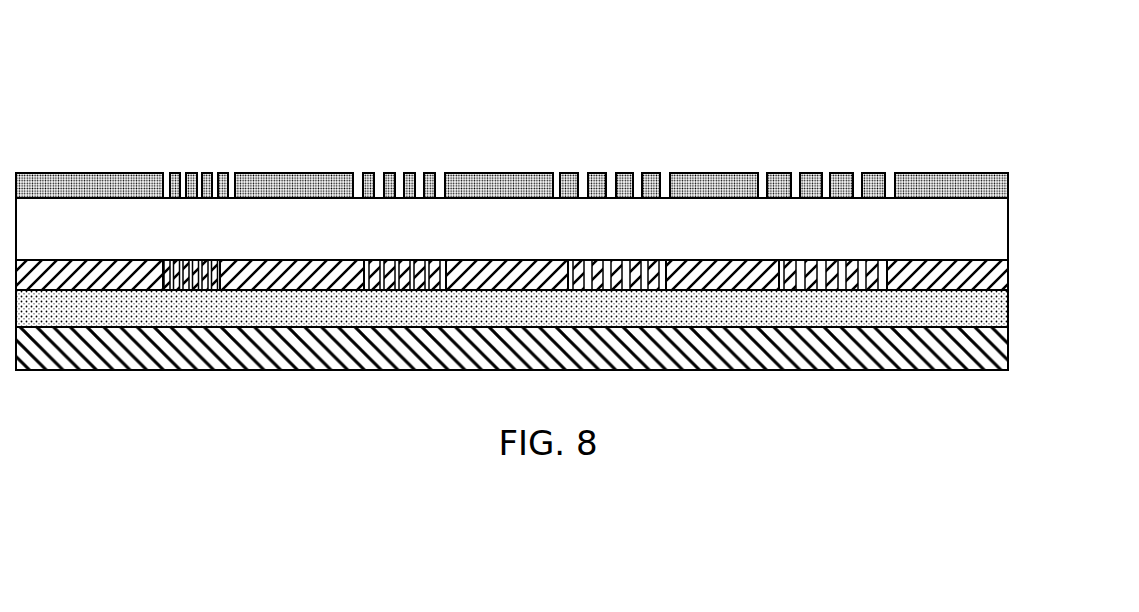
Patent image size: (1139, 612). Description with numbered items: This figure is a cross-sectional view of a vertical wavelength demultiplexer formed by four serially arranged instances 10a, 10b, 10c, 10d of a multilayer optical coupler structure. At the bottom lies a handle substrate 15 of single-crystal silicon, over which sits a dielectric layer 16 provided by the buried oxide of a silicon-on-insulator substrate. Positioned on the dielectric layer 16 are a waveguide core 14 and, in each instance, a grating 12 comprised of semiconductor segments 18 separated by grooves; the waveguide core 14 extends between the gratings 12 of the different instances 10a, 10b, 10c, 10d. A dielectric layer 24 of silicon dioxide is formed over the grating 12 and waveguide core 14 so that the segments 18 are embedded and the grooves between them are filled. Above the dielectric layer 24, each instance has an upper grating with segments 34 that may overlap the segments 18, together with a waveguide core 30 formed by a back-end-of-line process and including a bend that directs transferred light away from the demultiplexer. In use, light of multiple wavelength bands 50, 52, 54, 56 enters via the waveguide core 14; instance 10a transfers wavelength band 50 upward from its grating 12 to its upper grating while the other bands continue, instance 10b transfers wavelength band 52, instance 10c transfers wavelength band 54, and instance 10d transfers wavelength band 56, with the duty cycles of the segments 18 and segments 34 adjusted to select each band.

The instance of the structure 10a is at (143, 137).
The instance of the structure 10b is at (360, 138).
The instance of the structure 10c is at (577, 138).
The instance of the structure 10d is at (792, 140).
The grating 12 is at (479, 208).
The waveguide core 14 is at (93, 273).
The handle substrate 15 is at (970, 355).
The dielectric layer 16 is at (970, 317).
The segments 18 is at (178, 262).
The dielectric layer 24 is at (968, 230).
The waveguide core 30 is at (274, 186).
The segments 34 is at (223, 183).
The wavelength band 50 is at (180, 243).
The wavelength band 52 is at (392, 243).
The wavelength band 54 is at (615, 243).
The wavelength band 56 is at (825, 243).